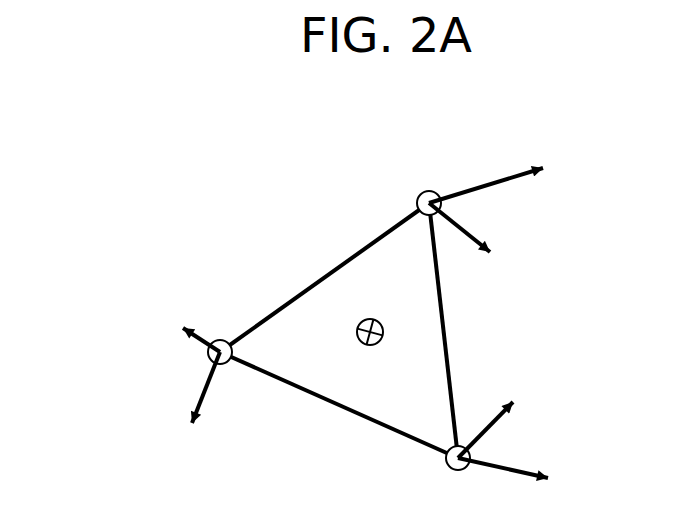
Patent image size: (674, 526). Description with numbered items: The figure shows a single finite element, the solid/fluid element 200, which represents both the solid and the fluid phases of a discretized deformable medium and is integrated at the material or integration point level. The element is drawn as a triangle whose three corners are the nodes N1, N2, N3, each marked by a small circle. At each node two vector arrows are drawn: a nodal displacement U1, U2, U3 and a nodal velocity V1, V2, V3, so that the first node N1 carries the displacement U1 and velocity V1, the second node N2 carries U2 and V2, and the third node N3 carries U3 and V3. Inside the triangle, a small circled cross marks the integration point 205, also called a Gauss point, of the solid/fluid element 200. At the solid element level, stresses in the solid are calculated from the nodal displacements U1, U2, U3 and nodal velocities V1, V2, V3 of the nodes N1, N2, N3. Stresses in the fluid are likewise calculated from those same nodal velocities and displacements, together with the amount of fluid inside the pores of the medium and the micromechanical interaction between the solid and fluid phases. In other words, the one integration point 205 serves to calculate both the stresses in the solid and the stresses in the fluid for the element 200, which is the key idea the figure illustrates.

The solid/fluid element 200 is at (167, 163).
The integration point 205 is at (388, 323).
The node N1 is at (419, 189).
The node N2 is at (194, 368).
The node N3 is at (449, 474).
The nodal displacement U1 is at (478, 241).
The nodal velocity V1 is at (486, 195).
The nodal displacement U2 is at (201, 323).
The nodal velocity V2 is at (201, 407).
The nodal displacement U3 is at (499, 413).
The nodal velocity V3 is at (507, 488).